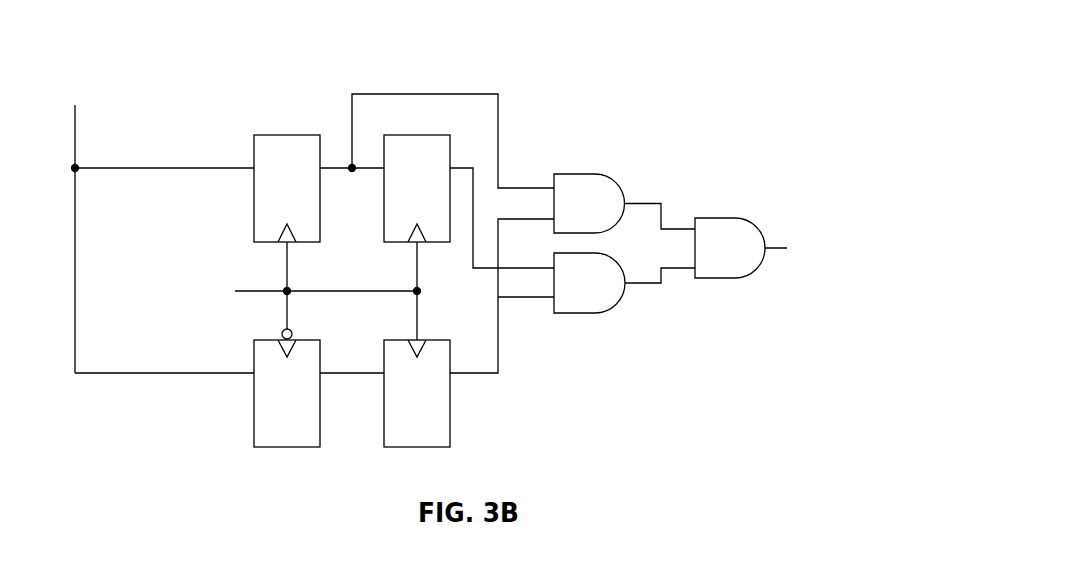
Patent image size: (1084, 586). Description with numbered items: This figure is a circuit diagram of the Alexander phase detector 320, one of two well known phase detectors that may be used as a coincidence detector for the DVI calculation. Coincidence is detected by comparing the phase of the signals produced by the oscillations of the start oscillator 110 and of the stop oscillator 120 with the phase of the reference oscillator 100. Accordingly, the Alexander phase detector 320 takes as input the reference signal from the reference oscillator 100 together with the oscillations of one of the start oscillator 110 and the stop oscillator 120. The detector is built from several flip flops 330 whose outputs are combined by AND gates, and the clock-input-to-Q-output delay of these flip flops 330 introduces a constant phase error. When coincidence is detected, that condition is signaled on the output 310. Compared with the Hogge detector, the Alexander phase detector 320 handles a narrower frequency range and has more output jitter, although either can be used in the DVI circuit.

The start oscillator 110 is at (108, 187).
The stop oscillator 120 is at (103, 68).
The reference oscillator 100 is at (157, 260).
The Alexander phase detector 320 is at (313, 259).
The flip flops 330 is at (352, 291).
The output 310 is at (873, 228).